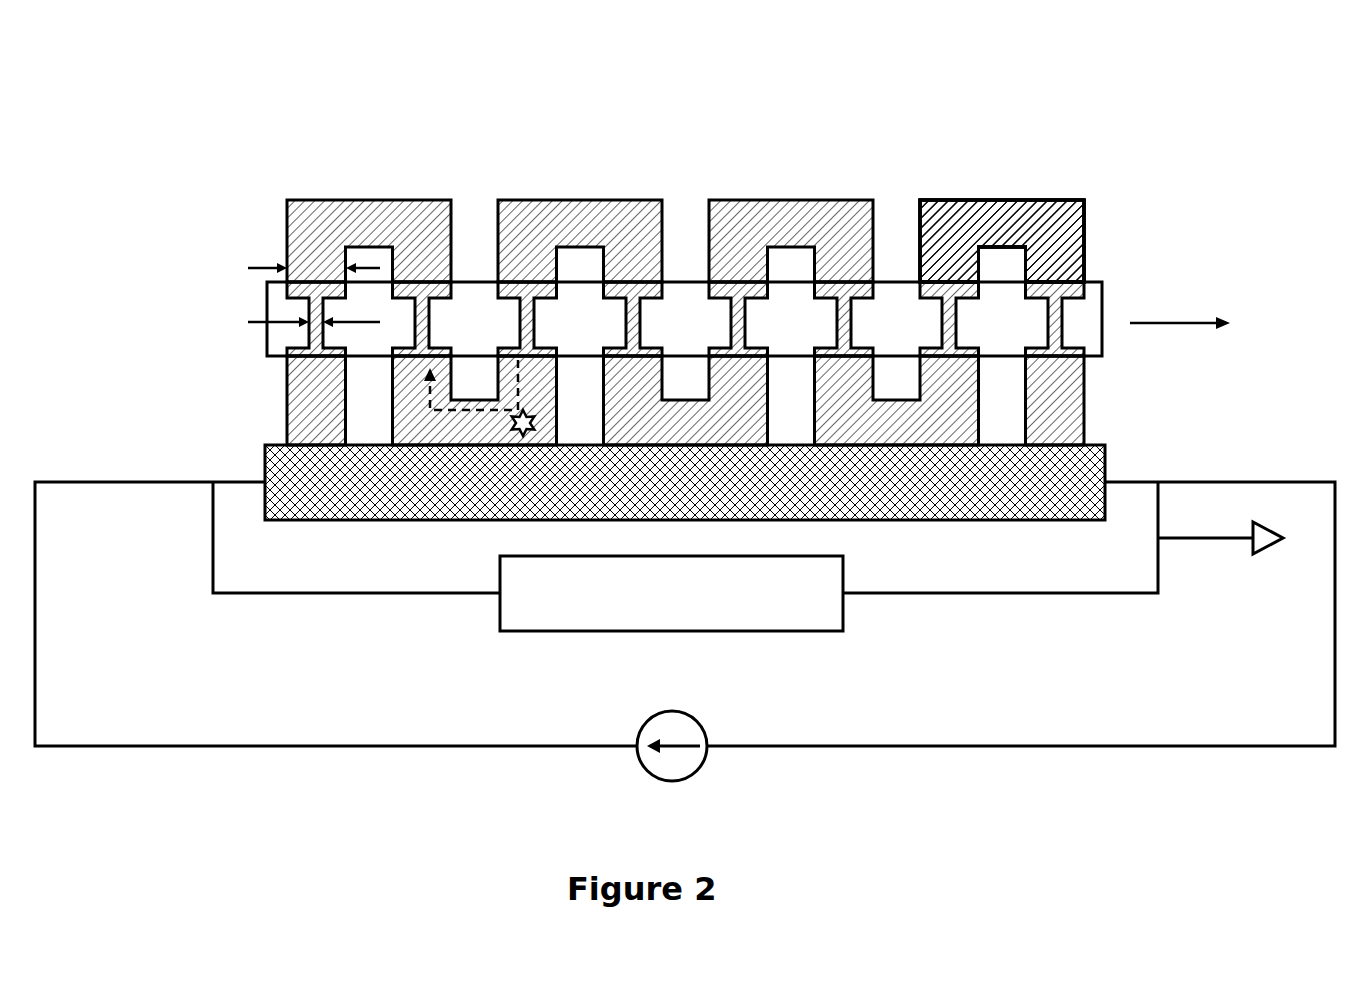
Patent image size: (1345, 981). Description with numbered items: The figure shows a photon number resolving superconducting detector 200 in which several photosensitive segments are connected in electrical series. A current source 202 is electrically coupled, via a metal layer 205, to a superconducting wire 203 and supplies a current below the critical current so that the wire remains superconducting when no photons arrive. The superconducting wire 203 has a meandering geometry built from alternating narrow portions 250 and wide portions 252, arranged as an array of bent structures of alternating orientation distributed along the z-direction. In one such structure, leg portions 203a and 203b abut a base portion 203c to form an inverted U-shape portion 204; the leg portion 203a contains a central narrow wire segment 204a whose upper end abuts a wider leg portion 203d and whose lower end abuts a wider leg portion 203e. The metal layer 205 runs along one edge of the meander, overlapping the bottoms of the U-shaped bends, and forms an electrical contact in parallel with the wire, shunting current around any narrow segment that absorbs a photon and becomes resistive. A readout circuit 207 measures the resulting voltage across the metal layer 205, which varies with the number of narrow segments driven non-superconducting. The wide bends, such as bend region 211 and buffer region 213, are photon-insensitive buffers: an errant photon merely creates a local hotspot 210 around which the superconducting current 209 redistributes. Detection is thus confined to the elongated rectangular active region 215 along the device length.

The photon number resolving superconducting (PNRS) detector 200 is at (134, 62).
The current source 202 is at (690, 713).
The superconducting wire 203 is at (360, 212).
The leg portion 203a is at (1107, 210).
The leg portion 203b is at (930, 258).
The base portion 203c is at (968, 217).
The wider leg portion 203d is at (1072, 268).
The wider leg portion 203e is at (1073, 387).
The inverted U-shape portion 204 is at (1087, 186).
The central narrow wire segment 204a is at (1052, 327).
The metal layer 205 is at (267, 467).
The readout circuit 207 is at (692, 606).
The superconducting current 209 is at (515, 395).
The local hotspot 210 is at (530, 419).
The bend region 211 is at (786, 234).
The buffer region 213 is at (490, 428).
The active region 215 is at (275, 358).
The narrow portion 250 is at (291, 322).
The wide portion 252 is at (286, 267).